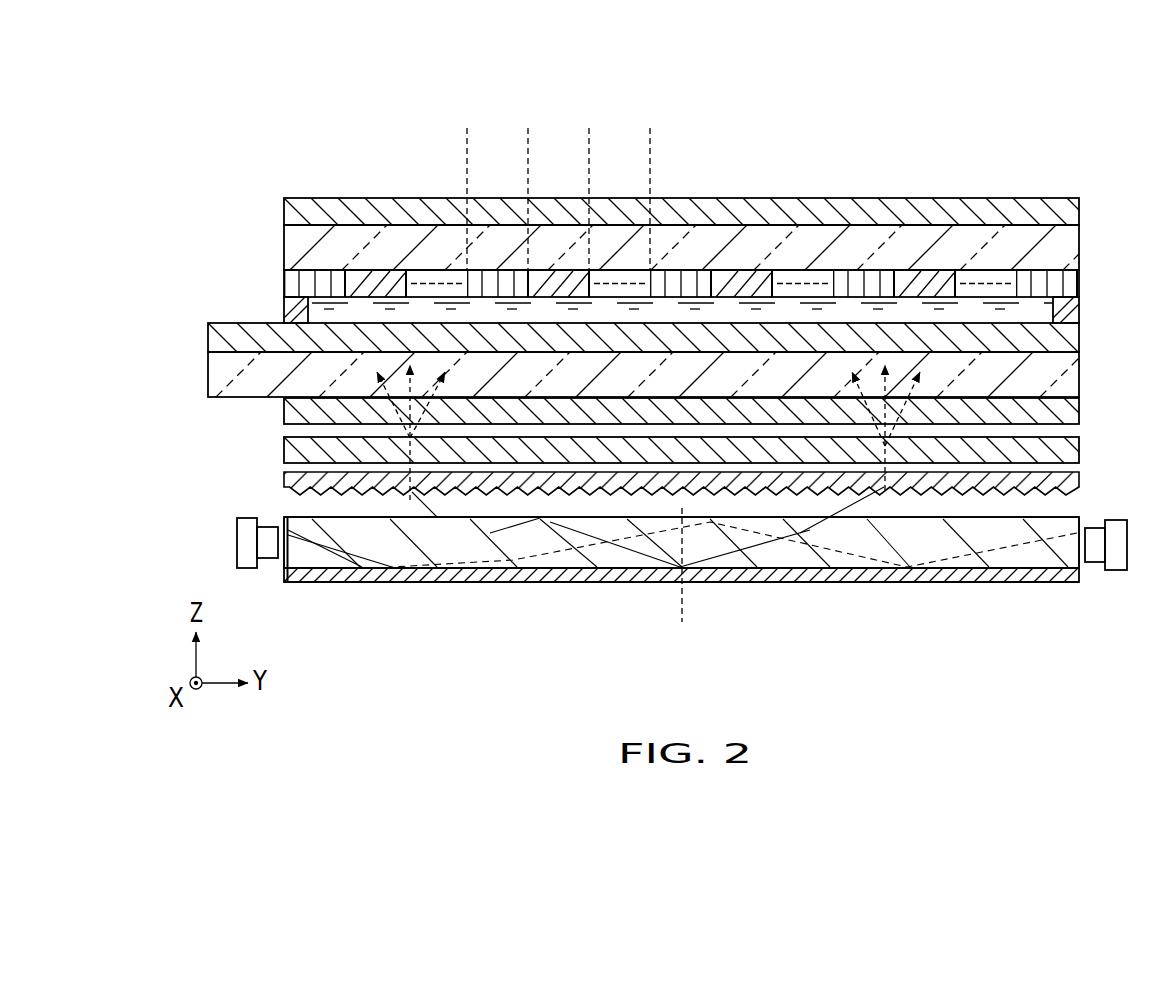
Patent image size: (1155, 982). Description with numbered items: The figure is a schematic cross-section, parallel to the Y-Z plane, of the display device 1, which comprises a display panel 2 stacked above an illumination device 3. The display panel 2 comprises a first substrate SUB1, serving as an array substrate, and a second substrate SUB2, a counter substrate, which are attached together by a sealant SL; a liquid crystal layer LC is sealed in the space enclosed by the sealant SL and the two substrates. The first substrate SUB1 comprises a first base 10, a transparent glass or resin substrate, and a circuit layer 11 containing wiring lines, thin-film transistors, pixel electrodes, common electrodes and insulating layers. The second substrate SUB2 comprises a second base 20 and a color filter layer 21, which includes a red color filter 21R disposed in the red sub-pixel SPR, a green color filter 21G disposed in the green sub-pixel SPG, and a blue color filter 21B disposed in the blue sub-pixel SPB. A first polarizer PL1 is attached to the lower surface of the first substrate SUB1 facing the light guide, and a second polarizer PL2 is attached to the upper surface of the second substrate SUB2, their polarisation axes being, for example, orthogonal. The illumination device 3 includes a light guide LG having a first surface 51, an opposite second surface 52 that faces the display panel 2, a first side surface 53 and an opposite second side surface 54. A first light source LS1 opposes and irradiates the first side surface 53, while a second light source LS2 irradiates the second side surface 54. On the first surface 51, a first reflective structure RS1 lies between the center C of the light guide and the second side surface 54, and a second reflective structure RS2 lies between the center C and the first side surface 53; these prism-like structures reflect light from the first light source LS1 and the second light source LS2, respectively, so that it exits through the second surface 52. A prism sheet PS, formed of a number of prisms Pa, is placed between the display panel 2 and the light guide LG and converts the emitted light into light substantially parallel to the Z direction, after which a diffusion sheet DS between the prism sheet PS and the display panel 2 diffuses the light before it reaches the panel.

The display device 1 is at (296, 166).
The display panel 2 is at (1058, 191).
The illumination device 3 is at (499, 593).
The first base 10 is at (1085, 353).
The circuit layer 11 is at (1085, 324).
The second base 20 is at (1085, 227).
The color filter layer 21 is at (1085, 271).
The red color filter 21R is at (495, 268).
The green color filter 21G is at (555, 268).
The blue color filter 21B is at (620, 283).
The first surface 51 is at (866, 592).
The second surface 52 is at (900, 504).
The first side surface 53 is at (295, 527).
The second side surface 54 is at (1069, 527).
The first substrate SUB1 is at (211, 318).
The second substrate SUB2 is at (281, 232).
The sealant SL is at (290, 314).
The liquid crystal layer LC is at (1003, 307).
The first polarizer PL1 is at (1084, 407).
The second polarizer PL2 is at (1081, 207).
The diffusion sheet DS is at (284, 447).
The prism sheet PS is at (284, 480).
The prism Pa is at (1001, 490).
The light guide LG is at (635, 566).
The first reflective structure RS1 is at (930, 583).
The second reflective structure RS2 is at (430, 583).
The first light source LS1 is at (248, 578).
The second light source LS2 is at (1097, 576).
The center C is at (681, 579).
The red sub-pixel SPR is at (524, 143).
The green sub-pixel SPG is at (585, 143).
The blue sub-pixel SPB is at (646, 143).